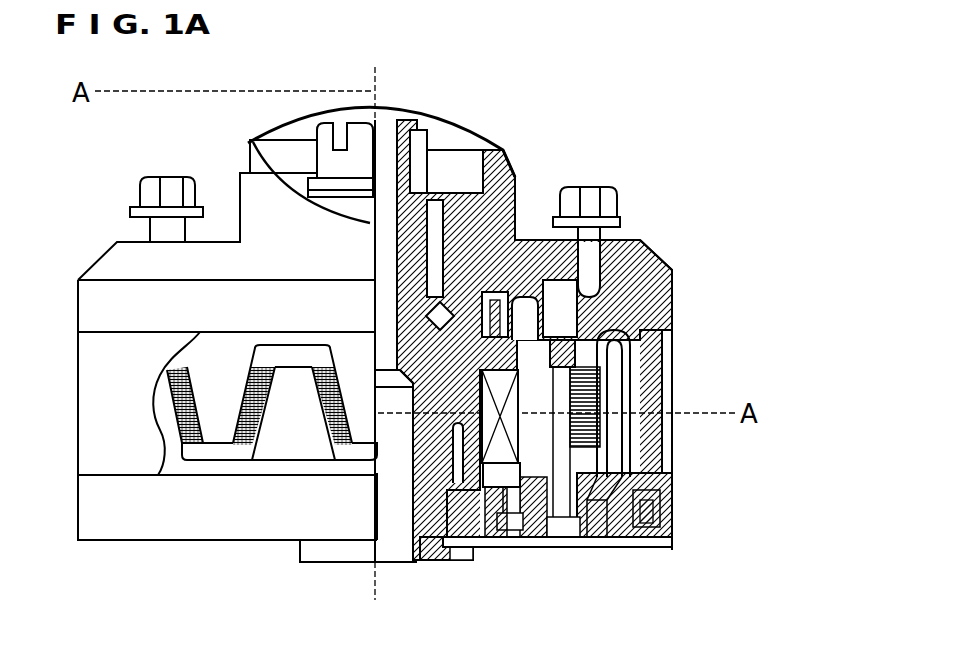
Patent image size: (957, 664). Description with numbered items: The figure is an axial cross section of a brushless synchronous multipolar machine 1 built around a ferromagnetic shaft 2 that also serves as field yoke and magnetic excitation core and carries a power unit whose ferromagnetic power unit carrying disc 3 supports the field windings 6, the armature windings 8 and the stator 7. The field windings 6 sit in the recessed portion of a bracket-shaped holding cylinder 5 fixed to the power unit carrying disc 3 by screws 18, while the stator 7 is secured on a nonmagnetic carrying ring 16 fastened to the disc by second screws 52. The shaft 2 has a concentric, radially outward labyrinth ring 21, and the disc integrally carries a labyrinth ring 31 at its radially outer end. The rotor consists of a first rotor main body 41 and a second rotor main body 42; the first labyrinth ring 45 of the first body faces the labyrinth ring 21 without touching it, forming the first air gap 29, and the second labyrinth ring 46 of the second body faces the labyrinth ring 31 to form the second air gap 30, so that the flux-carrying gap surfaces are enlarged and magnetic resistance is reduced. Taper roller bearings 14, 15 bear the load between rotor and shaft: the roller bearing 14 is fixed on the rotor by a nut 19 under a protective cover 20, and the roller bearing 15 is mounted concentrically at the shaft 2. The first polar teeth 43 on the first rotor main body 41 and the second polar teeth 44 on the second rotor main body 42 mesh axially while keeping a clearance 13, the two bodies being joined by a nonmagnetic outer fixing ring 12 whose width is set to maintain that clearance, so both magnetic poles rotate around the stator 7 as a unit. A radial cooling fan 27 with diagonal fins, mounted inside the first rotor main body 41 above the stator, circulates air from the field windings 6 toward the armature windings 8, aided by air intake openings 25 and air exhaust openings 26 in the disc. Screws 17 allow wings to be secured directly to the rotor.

The brushless synchronous multipolar machine 1 is at (684, 114).
The shaft 2 is at (430, 507).
The power unit carrying disc 3 is at (472, 553).
The holding cylinder 5 is at (480, 550).
The field windings 6 is at (560, 393).
The stator 7 is at (600, 402).
The armature windings 8 is at (617, 345).
The outer fixing ring 12 is at (118, 447).
The clearance 13 is at (230, 448).
The roller bearing 14 is at (462, 292).
The roller bearing 15 is at (480, 302).
The nonmagnetic carrying ring 16 is at (587, 550).
The screws 17 is at (148, 198).
The screws 18 is at (503, 550).
The nut 19 is at (327, 152).
The protective cover 20 is at (255, 152).
The labyrinth ring 21 is at (595, 255).
The air intake openings 25 is at (522, 548).
The air exhaust openings 26 is at (607, 530).
The radial cooling fan 27 is at (563, 315).
The first air gap 29 is at (636, 243).
The second air gap 30 is at (652, 540).
The labyrinth ring 31 is at (440, 550).
The first rotor main body 41 is at (257, 510).
The second rotor main body 42 is at (662, 485).
The first polar teeth 43 is at (217, 407).
The second polar teeth 44 is at (300, 440).
The first labyrinth ring 45 is at (527, 250).
The second labyrinth ring 46 is at (673, 538).
The second screws 52 is at (557, 547).